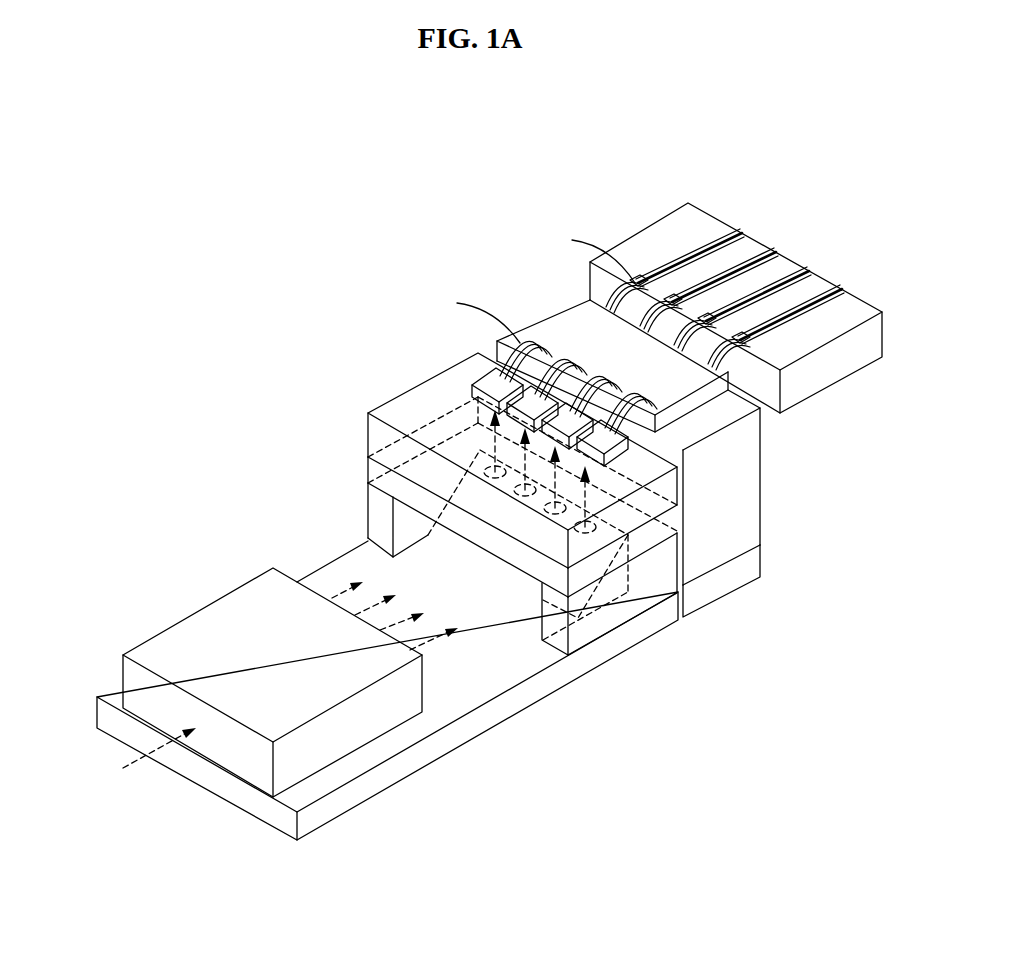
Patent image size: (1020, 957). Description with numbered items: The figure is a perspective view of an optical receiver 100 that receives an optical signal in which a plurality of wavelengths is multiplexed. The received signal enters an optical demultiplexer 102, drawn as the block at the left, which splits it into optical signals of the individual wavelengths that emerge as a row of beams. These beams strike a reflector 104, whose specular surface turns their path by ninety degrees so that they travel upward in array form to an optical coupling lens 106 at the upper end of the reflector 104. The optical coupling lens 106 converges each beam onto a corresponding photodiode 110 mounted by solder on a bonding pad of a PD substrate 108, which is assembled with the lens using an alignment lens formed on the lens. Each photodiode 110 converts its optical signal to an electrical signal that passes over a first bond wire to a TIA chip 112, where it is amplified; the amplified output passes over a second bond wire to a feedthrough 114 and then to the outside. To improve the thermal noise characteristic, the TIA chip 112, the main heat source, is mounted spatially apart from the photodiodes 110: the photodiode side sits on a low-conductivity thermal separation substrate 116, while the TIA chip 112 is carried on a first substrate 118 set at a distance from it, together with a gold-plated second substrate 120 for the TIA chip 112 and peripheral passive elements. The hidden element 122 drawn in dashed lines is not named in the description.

The optical receiver 100 is at (493, 125).
The optical demultiplexer 102 is at (337, 743).
The reflector 104 is at (513, 577).
The optical coupling lens 106 is at (378, 476).
The PD substrate 108 is at (377, 440).
The photodiode 110 is at (493, 380).
The TIA chip 112 is at (692, 383).
The feedthrough 114 is at (772, 247).
The thermal separation substrate 116 is at (442, 715).
The first substrate 118 is at (723, 580).
The second substrate 120 is at (753, 500).
The reflector block 122 is at (612, 618).